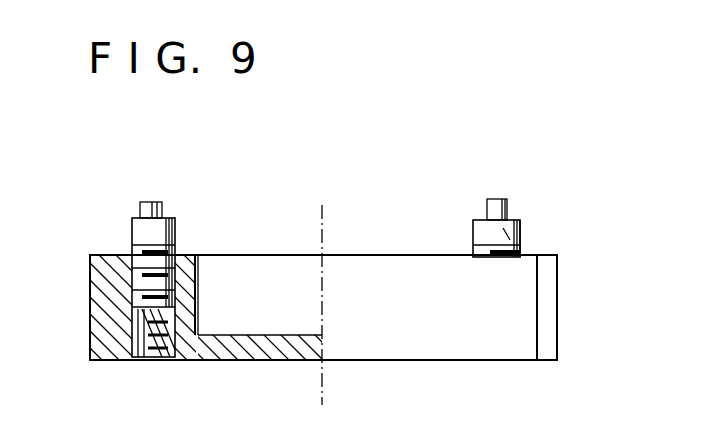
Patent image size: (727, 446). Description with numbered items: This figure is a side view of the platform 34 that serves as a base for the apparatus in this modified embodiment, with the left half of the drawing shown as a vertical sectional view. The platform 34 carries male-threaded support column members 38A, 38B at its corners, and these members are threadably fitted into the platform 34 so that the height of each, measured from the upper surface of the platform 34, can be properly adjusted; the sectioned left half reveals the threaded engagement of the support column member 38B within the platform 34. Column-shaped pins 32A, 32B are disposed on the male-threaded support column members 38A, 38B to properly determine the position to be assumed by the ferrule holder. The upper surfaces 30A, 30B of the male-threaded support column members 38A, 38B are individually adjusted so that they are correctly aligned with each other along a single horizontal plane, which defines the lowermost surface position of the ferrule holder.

The upper surface 30A is at (504, 210).
The upper surface 30B is at (157, 258).
The column-shaped pin 32A is at (500, 200).
The column-shaped pin 32B is at (155, 202).
The male-threaded support column member 38A is at (520, 228).
The male-threaded support column member 38B is at (160, 228).
The platform 34 is at (413, 345).